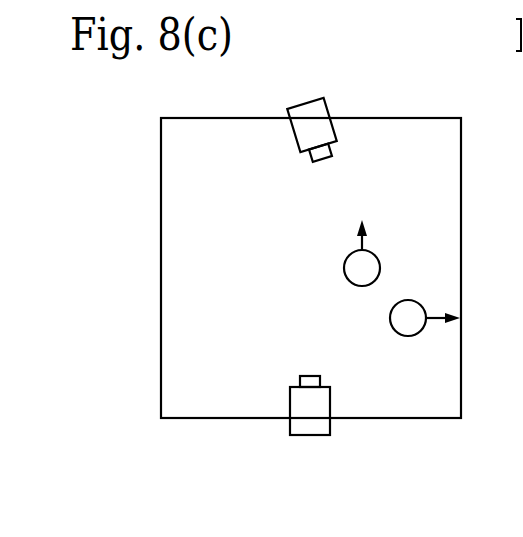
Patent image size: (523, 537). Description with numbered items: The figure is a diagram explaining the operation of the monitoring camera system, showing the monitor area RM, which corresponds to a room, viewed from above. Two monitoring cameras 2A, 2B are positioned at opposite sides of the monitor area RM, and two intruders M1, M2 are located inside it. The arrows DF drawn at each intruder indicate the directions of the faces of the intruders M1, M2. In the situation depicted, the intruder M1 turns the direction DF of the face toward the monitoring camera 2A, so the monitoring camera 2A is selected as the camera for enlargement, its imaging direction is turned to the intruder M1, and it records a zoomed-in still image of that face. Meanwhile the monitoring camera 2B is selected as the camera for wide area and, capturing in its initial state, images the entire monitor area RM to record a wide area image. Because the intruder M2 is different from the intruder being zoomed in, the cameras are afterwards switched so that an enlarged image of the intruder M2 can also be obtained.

The monitoring camera 2A is at (305, 100).
The monitoring camera 2B is at (307, 437).
The monitor area RM is at (402, 118).
The intruder M1 is at (343, 268).
The intruder M2 is at (405, 337).
The direction of the face DF is at (364, 245).